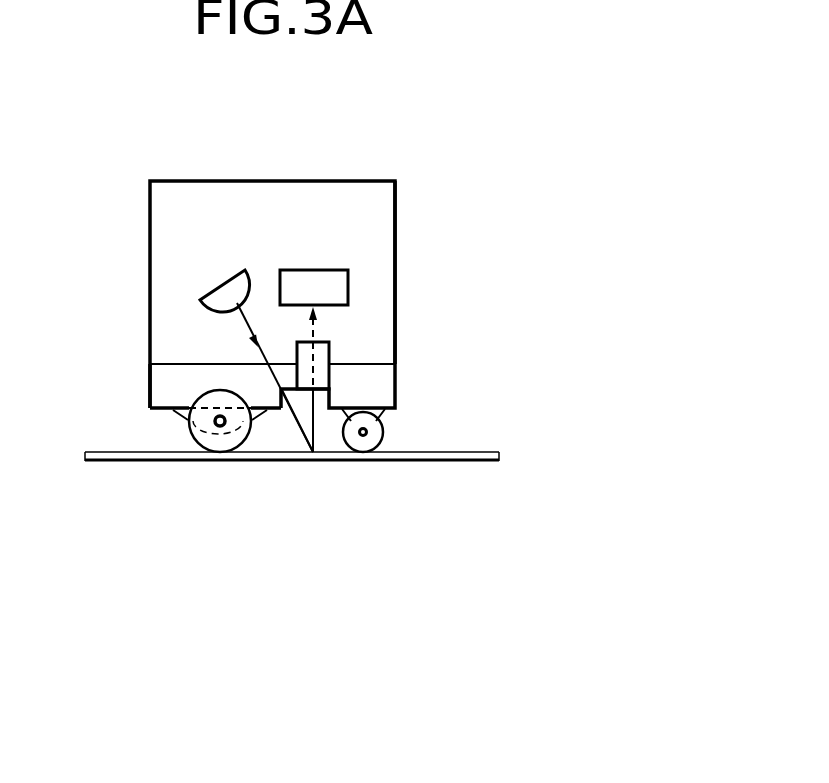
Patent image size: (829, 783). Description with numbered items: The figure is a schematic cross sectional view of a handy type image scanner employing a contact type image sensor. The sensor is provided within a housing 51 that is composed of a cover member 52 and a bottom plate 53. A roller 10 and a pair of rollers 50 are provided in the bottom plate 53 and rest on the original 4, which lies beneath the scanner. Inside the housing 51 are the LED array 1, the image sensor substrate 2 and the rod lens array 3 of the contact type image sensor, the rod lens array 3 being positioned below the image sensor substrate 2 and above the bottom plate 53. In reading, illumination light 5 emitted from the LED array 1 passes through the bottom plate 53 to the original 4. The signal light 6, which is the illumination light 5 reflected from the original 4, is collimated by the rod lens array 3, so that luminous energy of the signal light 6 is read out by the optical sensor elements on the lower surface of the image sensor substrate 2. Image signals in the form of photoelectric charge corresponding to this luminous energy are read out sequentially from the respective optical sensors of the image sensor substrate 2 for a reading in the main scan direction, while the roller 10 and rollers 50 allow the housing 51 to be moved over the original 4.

The housing 51 is at (340, 172).
The cover member 52 is at (397, 217).
The bottom plate 53 is at (148, 393).
The LED array 1 is at (220, 285).
The image sensor substrate 2 is at (315, 270).
The rod lens array 3 is at (330, 348).
The illumination light 5 is at (240, 334).
The signal light 6 is at (313, 403).
The roller 10 is at (213, 453).
The rollers 50 is at (364, 453).
The original 4 is at (459, 461).